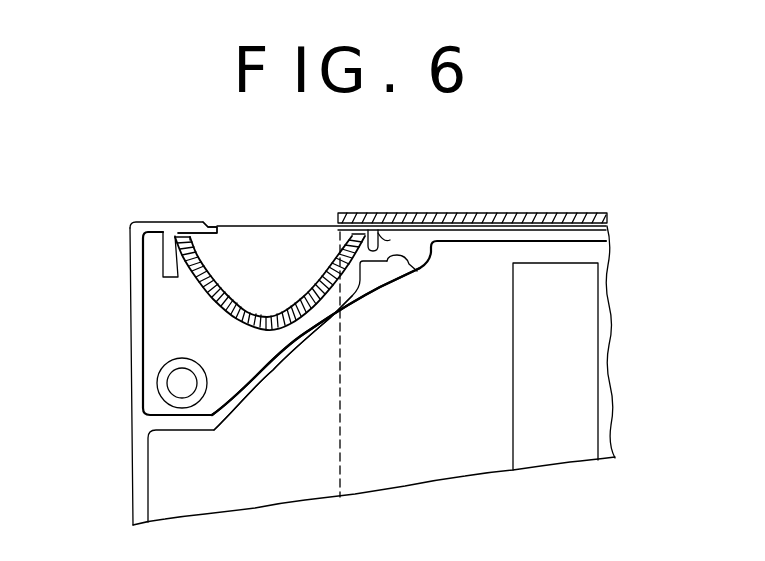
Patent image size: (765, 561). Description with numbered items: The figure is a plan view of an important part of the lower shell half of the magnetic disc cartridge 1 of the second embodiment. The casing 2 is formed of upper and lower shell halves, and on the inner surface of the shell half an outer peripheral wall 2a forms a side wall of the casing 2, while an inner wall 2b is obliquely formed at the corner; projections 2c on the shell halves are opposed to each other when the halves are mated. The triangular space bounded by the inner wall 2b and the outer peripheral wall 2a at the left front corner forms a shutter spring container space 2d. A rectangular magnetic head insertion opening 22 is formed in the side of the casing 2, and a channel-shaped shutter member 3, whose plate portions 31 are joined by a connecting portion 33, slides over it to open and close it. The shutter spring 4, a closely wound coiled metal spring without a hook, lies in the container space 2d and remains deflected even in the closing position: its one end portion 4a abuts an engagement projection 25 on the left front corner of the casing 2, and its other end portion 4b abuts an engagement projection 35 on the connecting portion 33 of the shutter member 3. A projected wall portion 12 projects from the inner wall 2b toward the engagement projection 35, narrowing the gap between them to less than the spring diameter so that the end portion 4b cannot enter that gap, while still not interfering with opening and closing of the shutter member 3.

The magnetic disc cartridge 1 is at (72, 183).
The casing 2 is at (118, 492).
The outer peripheral wall 2a is at (130, 315).
The inner wall 2b is at (278, 366).
The projection 2c is at (157, 397).
The shutter spring container space 2d is at (235, 253).
The shutter member 3 is at (549, 208).
The shutter spring 4 is at (307, 274).
The end portion of shutter spring 4a is at (178, 232).
The other end portion of shutter spring 4b is at (363, 216).
The projected wall portion 12 is at (415, 270).
The magnetic head insertion opening 22 is at (580, 367).
The engagement projection 25 is at (165, 268).
The plate portion 31 is at (340, 467).
The connecting portion 33 is at (493, 213).
The engagement projection 35 is at (398, 228).